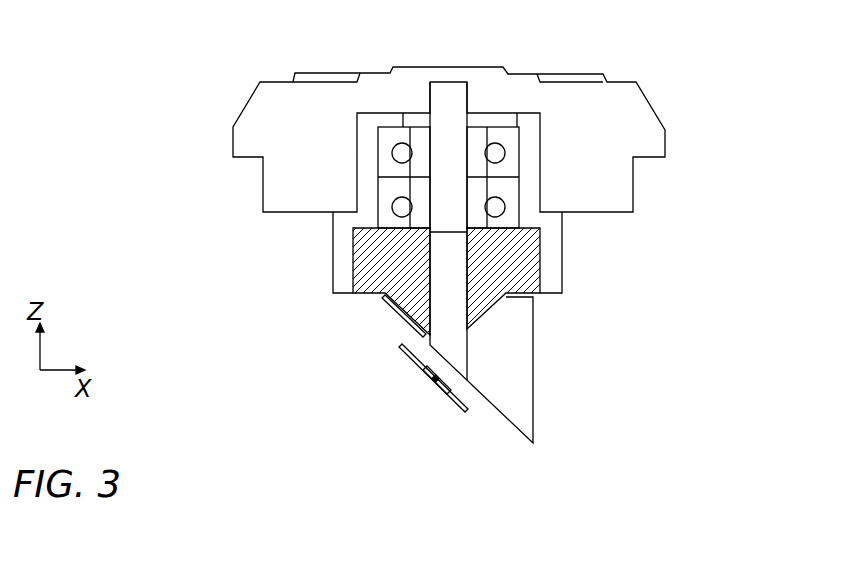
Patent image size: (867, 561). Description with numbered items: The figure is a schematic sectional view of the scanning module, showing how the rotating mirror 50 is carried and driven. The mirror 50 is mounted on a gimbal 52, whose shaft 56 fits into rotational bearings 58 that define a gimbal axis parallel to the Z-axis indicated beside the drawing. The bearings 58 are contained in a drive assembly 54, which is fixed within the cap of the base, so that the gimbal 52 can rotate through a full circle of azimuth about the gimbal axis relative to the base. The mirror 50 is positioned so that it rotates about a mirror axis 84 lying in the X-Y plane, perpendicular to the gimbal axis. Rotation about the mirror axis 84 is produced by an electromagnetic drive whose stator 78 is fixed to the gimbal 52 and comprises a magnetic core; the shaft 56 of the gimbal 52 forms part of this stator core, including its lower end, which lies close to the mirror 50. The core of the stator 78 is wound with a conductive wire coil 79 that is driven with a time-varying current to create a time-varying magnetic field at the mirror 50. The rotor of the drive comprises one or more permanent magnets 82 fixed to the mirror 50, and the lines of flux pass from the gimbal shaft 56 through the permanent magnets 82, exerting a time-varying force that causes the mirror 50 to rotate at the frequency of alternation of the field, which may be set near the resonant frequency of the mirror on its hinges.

The rotating mirror 50 is at (457, 411).
The gimbal 52 is at (527, 368).
The drive assembly 54 is at (650, 98).
The shaft 56 is at (443, 276).
The rotational bearings 58 is at (506, 142).
The stator 78 is at (374, 421).
The conductive wire coil 79 is at (372, 278).
The permanent magnets 82 is at (423, 377).
The mirror axis 84 is at (433, 381).